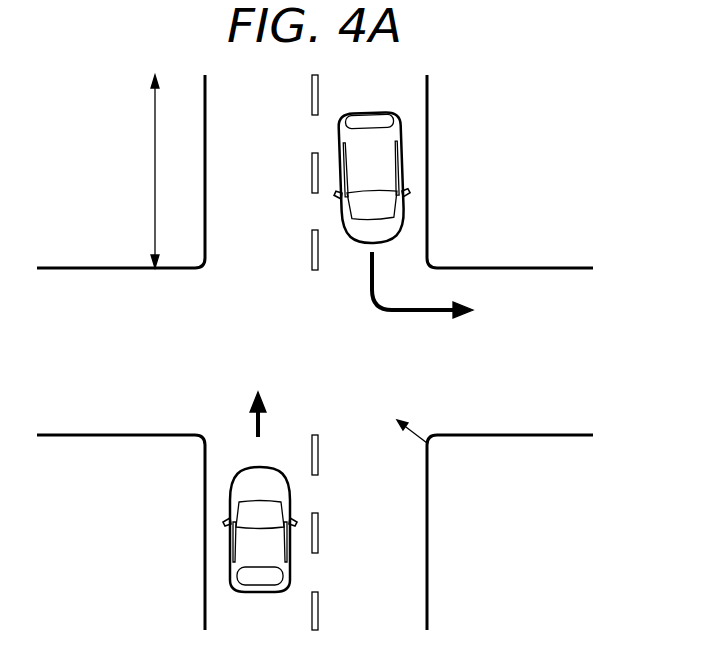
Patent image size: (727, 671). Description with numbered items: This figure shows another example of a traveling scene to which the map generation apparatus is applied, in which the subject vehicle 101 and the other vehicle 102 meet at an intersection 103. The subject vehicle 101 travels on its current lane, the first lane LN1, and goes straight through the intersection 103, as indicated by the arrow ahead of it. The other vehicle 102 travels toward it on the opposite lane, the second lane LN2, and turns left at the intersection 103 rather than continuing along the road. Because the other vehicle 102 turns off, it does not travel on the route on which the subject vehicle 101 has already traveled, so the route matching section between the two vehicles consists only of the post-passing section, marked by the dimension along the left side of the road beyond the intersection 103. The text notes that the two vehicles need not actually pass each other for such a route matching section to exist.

The subject vehicle 101 is at (228, 537).
The other vehicle 102 is at (400, 180).
The intersection 103 is at (427, 443).
The first lane LN1 is at (220, 618).
The second lane LN2 is at (402, 97).